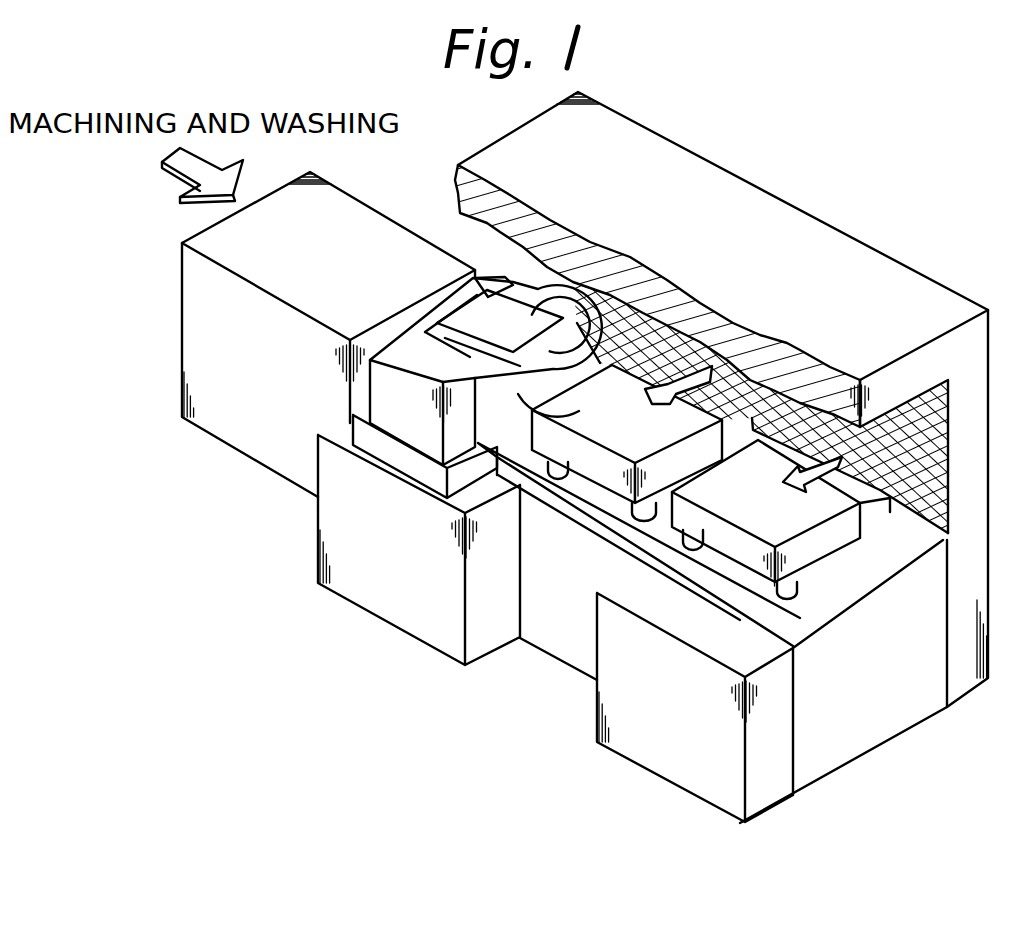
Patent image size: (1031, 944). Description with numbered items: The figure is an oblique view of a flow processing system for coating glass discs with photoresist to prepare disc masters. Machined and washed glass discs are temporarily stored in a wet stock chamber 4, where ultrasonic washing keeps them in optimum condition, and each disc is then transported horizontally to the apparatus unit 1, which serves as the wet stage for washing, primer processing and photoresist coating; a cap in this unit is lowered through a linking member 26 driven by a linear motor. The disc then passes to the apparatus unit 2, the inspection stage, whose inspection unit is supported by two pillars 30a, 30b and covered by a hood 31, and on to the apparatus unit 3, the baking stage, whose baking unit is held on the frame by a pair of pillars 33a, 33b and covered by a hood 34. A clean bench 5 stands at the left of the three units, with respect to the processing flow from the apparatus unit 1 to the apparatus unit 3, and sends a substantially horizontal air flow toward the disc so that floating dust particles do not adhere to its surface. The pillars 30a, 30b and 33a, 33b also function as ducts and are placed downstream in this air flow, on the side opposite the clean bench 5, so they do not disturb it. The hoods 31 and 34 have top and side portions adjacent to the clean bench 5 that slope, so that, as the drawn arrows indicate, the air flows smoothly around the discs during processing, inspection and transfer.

The apparatus unit 1 is at (510, 323).
The apparatus unit 2 is at (613, 432).
The apparatus unit 3 is at (748, 513).
The wet stock chamber 4 is at (330, 278).
The clean bench 5 is at (814, 223).
The linking member 26 is at (377, 393).
The pillar 30a is at (557, 474).
The pillar 30b is at (648, 516).
The hood 31 is at (520, 450).
The pillar 33a is at (686, 550).
The pillar 33b is at (788, 598).
The hood 34 is at (820, 547).